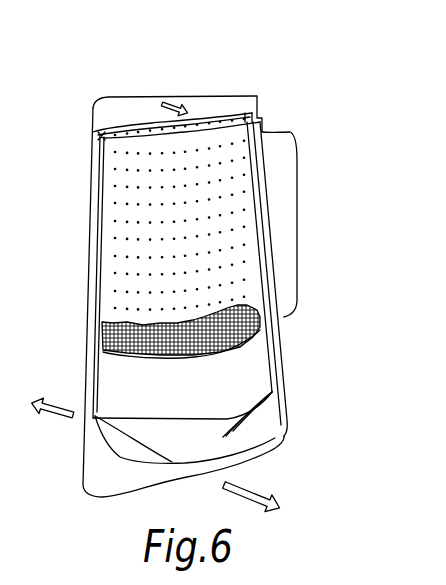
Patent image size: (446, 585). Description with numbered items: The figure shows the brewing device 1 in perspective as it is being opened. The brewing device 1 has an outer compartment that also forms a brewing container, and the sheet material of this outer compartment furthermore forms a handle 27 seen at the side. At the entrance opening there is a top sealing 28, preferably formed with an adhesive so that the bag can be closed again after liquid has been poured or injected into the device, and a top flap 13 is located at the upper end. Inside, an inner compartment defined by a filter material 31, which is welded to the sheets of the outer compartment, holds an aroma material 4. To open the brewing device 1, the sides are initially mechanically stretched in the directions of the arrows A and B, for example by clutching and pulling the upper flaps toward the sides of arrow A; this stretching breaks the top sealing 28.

The brewing device 1 is at (290, 73).
The top flap 13 is at (223, 107).
The top sealing 28 is at (104, 137).
The handle 27 is at (283, 203).
The aroma material 4 is at (247, 322).
The filter material 31 is at (258, 343).
The arrow A is at (163, 104).
The arrow B is at (52, 413).